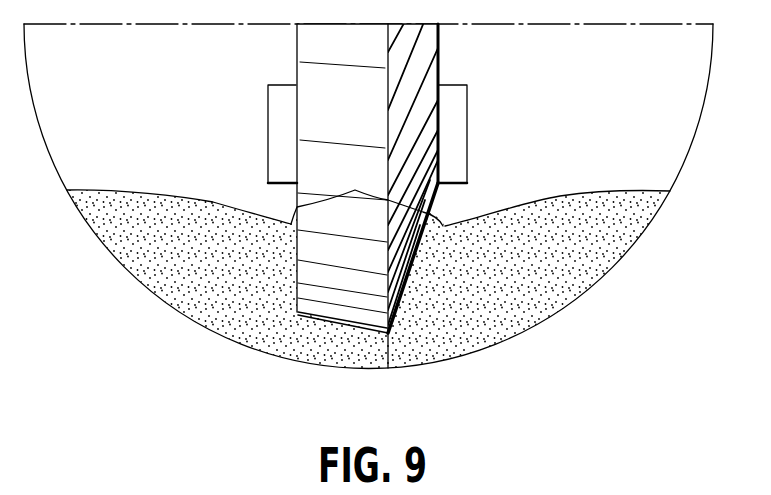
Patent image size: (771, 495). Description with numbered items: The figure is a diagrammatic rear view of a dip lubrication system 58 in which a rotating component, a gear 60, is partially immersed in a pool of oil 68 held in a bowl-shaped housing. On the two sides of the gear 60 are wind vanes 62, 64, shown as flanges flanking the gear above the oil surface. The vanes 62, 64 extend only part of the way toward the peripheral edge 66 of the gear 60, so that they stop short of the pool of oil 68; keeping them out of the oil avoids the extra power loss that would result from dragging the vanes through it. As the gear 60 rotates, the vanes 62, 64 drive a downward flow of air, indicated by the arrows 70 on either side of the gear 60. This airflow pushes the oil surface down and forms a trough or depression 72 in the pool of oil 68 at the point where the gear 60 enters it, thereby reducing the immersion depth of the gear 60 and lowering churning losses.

The dip lubrication system 58 is at (90, 245).
The gear 60 is at (441, 65).
The wind vane 62 is at (268, 122).
The wind vane 64 is at (468, 125).
The peripheral edge 66 is at (388, 368).
The pool of oil 68 is at (215, 263).
The arrows 70 is at (281, 212).
The trough or depression 72 is at (355, 190).